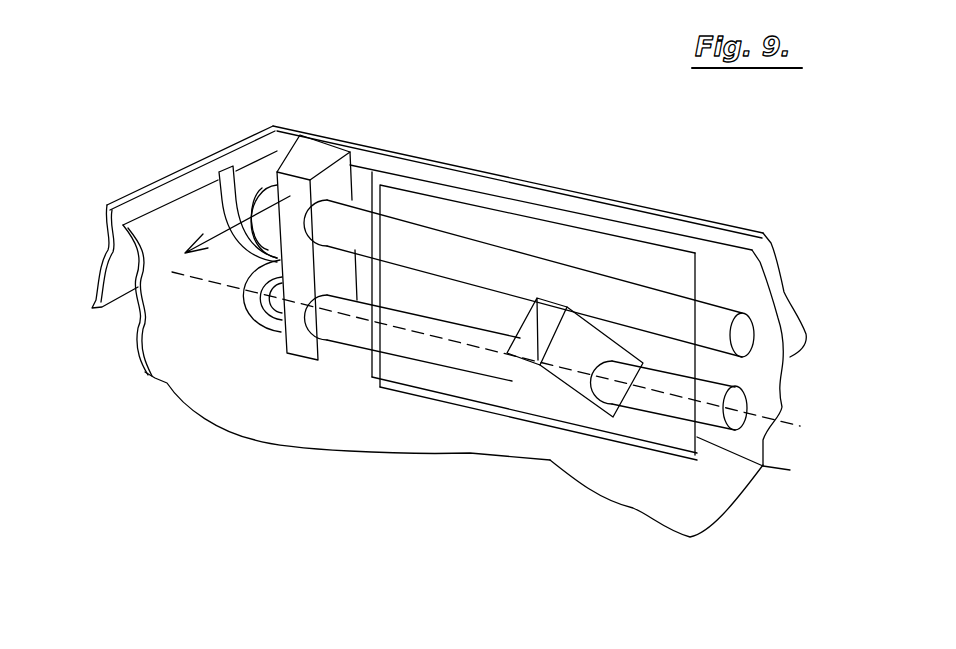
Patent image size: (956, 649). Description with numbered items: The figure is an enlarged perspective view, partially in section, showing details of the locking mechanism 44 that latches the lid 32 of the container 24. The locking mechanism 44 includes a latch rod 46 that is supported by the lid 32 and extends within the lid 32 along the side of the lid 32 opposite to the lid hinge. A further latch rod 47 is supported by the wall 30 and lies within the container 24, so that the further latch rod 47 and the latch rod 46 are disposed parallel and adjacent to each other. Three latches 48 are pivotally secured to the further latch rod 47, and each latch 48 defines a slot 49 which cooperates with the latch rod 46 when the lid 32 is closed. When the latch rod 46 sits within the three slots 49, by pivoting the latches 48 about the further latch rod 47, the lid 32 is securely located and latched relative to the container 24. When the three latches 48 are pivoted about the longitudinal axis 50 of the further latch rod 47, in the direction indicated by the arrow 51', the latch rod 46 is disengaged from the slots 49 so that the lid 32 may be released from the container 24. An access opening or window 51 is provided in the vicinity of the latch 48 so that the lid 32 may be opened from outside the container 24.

The container 24 is at (290, 408).
The wall 30 is at (660, 470).
The lid 32 is at (153, 193).
The locking mechanism 44 is at (510, 164).
The latch rod 46 is at (550, 273).
The further latch rod 47 is at (480, 358).
The latch 48 is at (315, 158).
The slot 49 is at (333, 342).
The longitudinal axis 50 is at (222, 287).
The access opening or window 51 is at (826, 483).
The arrow 51' is at (227, 182).